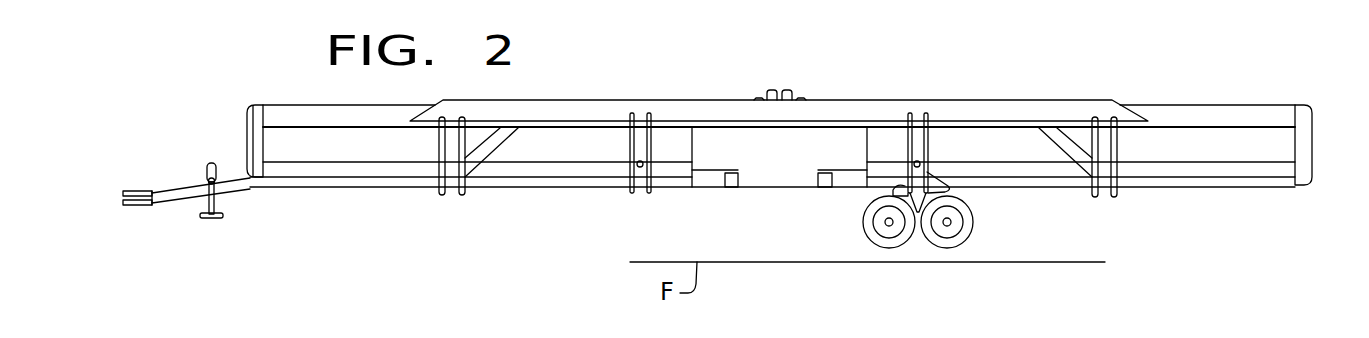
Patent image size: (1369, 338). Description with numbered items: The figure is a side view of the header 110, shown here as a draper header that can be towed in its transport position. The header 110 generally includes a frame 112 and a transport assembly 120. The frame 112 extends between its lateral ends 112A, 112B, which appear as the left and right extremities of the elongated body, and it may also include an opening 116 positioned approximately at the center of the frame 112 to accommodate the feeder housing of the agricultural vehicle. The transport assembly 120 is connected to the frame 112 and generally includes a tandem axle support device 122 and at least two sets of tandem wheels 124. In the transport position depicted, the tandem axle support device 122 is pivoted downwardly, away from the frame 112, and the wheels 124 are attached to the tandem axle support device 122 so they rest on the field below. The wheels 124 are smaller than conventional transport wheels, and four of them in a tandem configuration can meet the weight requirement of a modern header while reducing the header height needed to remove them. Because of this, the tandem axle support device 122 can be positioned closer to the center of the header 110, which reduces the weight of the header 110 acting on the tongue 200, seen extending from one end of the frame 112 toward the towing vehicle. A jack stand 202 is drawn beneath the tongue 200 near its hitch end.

The header 110 is at (996, 82).
The frame 112 is at (1075, 100).
The lateral end 112A is at (245, 127).
The lateral end 112B is at (1312, 139).
The opening 116 is at (739, 132).
The transport assembly 120 is at (861, 249).
The tandem axle support device 122 is at (918, 248).
The tandem wheels 124 is at (970, 231).
The tongue 200 is at (163, 215).
The jack stand 202 is at (217, 203).